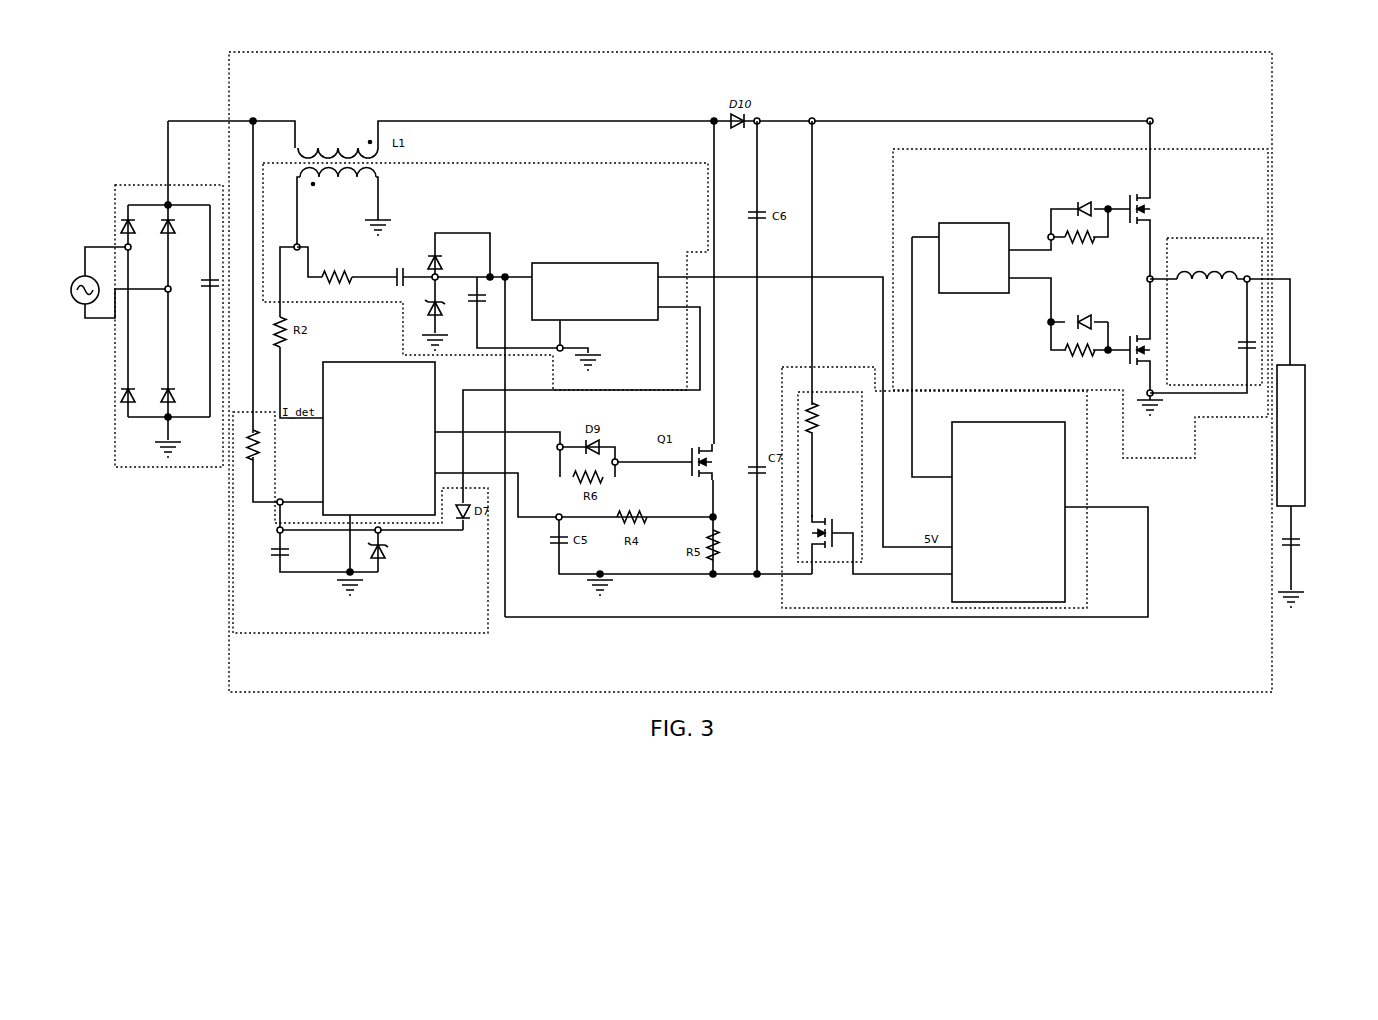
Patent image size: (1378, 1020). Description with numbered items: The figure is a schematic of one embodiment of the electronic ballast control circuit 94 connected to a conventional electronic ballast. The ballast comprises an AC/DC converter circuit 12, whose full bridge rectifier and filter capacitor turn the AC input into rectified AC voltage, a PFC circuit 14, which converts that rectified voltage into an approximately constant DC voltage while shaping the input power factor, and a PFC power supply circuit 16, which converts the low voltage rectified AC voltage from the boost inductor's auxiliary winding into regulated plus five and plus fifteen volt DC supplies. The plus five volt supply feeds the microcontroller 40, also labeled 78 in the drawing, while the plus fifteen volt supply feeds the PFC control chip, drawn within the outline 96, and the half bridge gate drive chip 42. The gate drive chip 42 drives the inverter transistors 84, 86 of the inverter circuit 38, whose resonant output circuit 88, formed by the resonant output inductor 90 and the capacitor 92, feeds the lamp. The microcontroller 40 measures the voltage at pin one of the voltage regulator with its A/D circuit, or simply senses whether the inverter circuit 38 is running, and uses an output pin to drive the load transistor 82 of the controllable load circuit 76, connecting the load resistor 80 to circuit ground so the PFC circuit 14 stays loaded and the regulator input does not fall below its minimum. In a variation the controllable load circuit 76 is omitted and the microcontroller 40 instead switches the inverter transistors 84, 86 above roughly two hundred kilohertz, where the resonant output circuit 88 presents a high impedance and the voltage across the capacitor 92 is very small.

The AC/DC converter circuit 12 is at (153, 185).
The PFC circuit 14 is at (232, 112).
The PFC power supply circuit 16 is at (413, 163).
The inverter circuit 38 is at (1087, 276).
The microcontroller 40 is at (1056, 462).
The half bridge gate drive chip 42 is at (937, 228).
The controllable load circuit 76 is at (984, 404).
The microcontroller 78 is at (1065, 565).
The load resistor 80 is at (825, 410).
The load transistor 82 is at (832, 562).
The inverter transistor 84 is at (1160, 188).
The inverter transistor 86 is at (1123, 370).
The resonant output circuit 88 is at (1241, 281).
The resonant output inductor 90 is at (1215, 233).
The resonant output circuit capacitor 92 is at (1280, 343).
The electronic ballast control circuit 94 is at (1087, 542).
The PFC controller circuit 96 is at (488, 618).